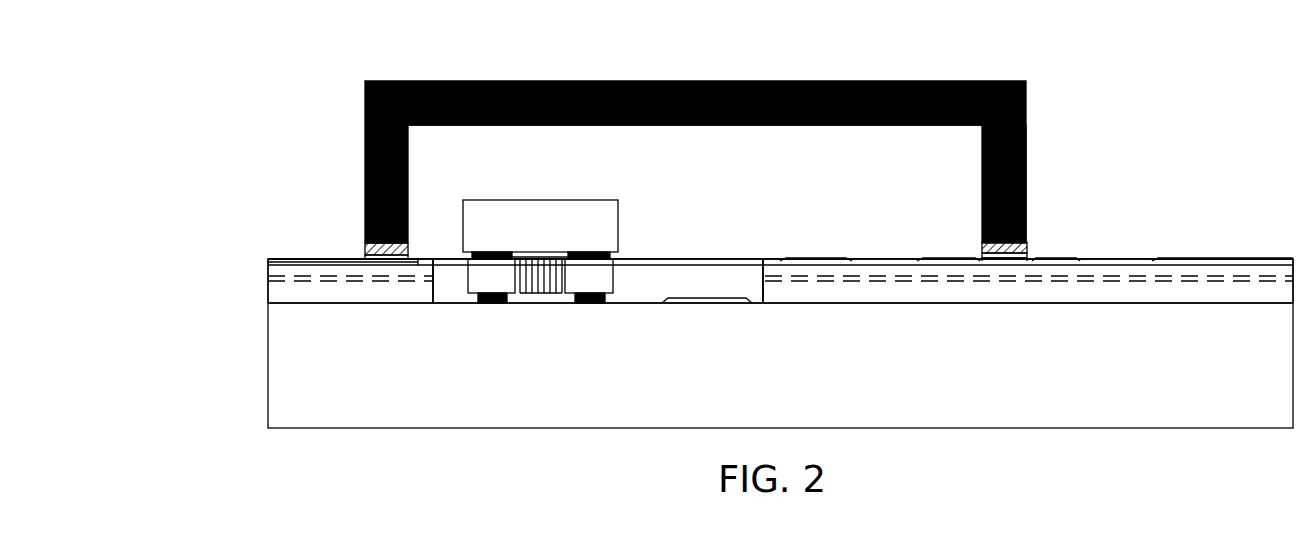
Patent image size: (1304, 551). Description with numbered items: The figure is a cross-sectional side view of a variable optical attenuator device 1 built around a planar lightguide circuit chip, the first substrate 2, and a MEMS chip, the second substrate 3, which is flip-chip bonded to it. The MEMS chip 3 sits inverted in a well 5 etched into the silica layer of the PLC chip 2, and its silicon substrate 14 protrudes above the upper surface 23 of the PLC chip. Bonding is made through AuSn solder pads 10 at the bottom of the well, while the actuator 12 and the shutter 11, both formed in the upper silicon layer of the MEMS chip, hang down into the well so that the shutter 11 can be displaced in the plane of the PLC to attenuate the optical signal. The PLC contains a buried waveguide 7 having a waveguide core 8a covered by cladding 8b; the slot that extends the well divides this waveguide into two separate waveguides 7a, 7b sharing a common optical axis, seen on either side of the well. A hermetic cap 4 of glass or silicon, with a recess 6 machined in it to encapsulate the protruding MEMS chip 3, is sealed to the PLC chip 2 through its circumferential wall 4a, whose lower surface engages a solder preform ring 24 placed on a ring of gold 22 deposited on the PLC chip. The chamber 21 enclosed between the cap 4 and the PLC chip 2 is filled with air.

The VOA device 1 is at (1193, 116).
The first substrate 2 is at (282, 258).
The second substrate 3 is at (629, 213).
The hermetic cap 4 is at (1003, 80).
The circumferential wall 4a is at (1027, 131).
The well 5 is at (704, 271).
The recess 6 is at (409, 155).
The waveguide 7 is at (266, 292).
The separate waveguide 7a is at (368, 303).
The separate waveguide 7b is at (1130, 303).
The waveguide core 8a is at (298, 281).
The cladding 8b is at (267, 268).
The solder pads 10 is at (490, 304).
The shutter 11 is at (750, 305).
The actuator 12 is at (542, 291).
The silicon substrate 14 is at (553, 239).
The chamber 21 is at (829, 181).
The ring of gold 22 is at (360, 257).
The upper surface 23 is at (1256, 257).
The solder preform ring 24 is at (367, 252).